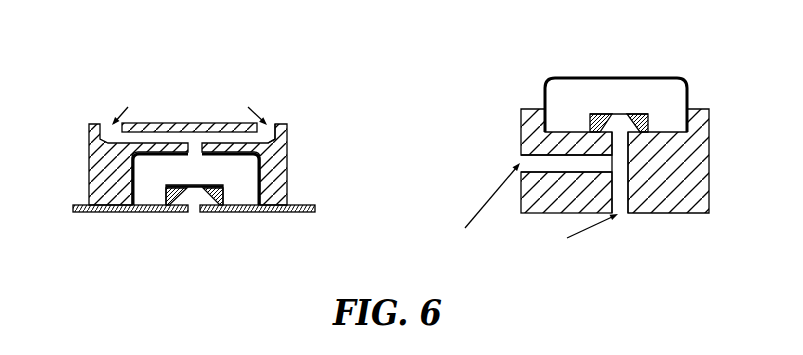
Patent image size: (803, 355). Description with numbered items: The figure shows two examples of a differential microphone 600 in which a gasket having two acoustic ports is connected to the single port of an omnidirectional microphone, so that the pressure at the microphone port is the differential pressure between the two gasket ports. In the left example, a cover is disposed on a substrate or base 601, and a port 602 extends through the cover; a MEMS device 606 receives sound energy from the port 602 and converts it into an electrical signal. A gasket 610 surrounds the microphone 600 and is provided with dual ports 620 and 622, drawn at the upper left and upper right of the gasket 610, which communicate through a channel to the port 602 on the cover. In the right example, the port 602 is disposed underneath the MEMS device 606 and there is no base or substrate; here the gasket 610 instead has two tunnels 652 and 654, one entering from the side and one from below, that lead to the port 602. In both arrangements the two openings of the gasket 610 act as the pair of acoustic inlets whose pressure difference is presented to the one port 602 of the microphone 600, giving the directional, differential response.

The microphone 600 is at (385, 128).
The substrate or base 601 is at (128, 213).
The port 602 is at (197, 154).
The MEMS device 606 is at (646, 113).
The gasket 610 is at (97, 160).
The port 620 is at (110, 125).
The port 622 is at (270, 125).
The tunnel 652 is at (543, 162).
The tunnel 654 is at (620, 187).